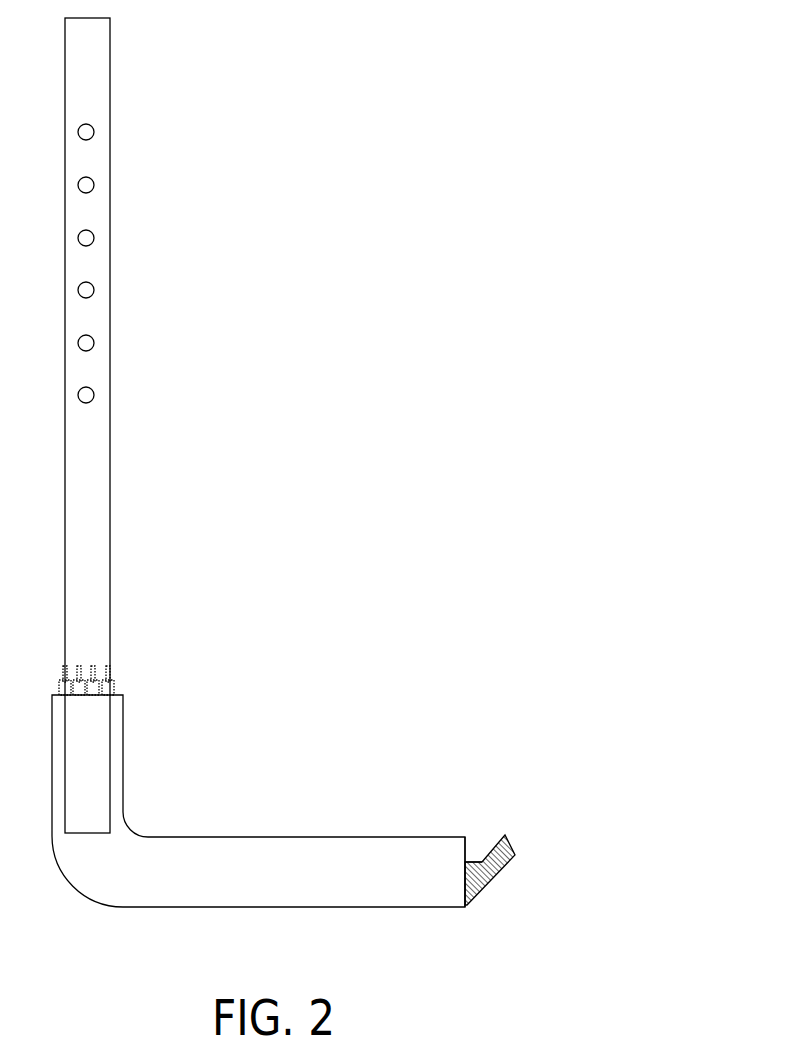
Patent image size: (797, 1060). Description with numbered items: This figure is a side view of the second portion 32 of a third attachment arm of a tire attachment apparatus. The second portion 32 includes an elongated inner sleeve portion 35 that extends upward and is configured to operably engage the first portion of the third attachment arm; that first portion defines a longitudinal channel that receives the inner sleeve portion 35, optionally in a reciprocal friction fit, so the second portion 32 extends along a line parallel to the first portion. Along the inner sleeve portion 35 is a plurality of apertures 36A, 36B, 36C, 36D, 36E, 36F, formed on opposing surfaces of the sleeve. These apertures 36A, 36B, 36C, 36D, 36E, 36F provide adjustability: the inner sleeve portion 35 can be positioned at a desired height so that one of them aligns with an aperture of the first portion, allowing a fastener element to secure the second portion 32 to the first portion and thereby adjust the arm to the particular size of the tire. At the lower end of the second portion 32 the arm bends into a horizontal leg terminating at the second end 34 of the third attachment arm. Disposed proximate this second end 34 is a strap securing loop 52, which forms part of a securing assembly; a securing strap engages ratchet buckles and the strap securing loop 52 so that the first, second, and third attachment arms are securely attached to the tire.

The second portion 32 is at (304, 511).
The second end 34 is at (427, 781).
The inner sleeve portion 35 is at (87, 546).
The aperture 36A is at (146, 380).
The aperture 36B is at (146, 327).
The aperture 36C is at (148, 276).
The aperture 36D is at (146, 222).
The aperture 36E is at (148, 171).
The aperture 36F is at (146, 123).
The strap securing loop 52 is at (495, 862).